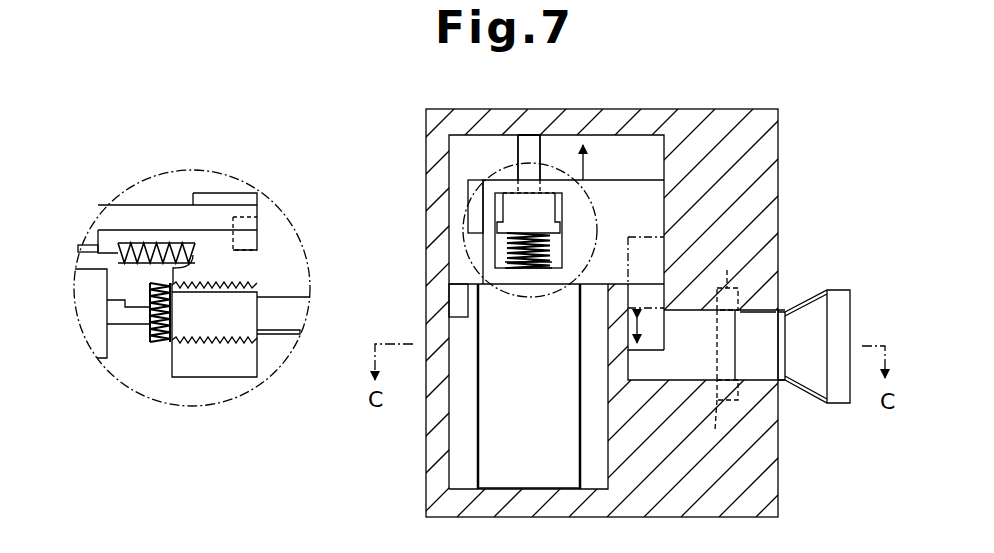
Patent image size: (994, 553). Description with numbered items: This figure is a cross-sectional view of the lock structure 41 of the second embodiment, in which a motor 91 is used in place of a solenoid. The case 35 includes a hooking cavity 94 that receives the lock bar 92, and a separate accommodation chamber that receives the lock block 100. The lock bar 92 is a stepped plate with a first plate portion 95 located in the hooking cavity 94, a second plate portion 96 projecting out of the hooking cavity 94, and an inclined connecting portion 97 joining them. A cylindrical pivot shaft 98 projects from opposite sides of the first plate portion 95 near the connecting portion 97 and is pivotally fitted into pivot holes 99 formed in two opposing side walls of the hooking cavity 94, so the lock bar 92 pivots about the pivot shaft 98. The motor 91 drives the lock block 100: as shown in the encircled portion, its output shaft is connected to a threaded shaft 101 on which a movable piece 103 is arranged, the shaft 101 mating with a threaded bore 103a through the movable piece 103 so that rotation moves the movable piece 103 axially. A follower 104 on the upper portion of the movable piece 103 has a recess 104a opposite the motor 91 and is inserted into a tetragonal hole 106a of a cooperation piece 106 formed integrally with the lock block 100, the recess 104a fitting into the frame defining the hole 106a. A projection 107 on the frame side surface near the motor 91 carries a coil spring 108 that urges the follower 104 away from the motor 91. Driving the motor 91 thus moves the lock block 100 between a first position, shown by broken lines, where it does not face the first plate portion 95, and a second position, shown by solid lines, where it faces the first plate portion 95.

The case 35 is at (578, 112).
The lock structure 41 is at (803, 103).
The motor 91 is at (463, 433).
The lock bar 92 is at (840, 403).
The hooking cavity 94 is at (757, 381).
The first plate portion 95 is at (677, 381).
The second plate portion 96 is at (845, 300).
The connecting portion 97 is at (760, 316).
The pivot shaft 98 is at (720, 351).
The pivot holes 99 is at (718, 345).
The lock block 100 is at (647, 343).
The shaft 101 is at (532, 247).
The movable piece 103 is at (472, 213).
The bore 103a is at (278, 349).
The follower 104 is at (548, 207).
The recess 104a is at (518, 176).
The cooperation piece 106 is at (650, 190).
The tetragonal hole 106a is at (500, 270).
The projection 107 is at (548, 286).
The coil spring 108 is at (512, 253).